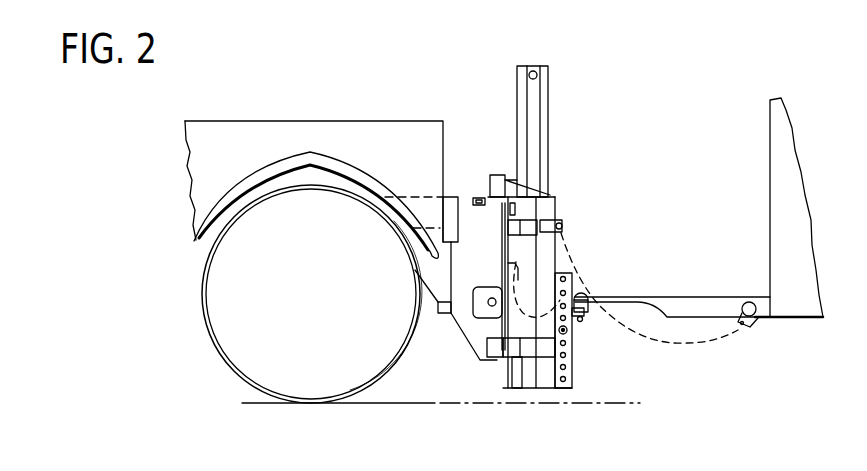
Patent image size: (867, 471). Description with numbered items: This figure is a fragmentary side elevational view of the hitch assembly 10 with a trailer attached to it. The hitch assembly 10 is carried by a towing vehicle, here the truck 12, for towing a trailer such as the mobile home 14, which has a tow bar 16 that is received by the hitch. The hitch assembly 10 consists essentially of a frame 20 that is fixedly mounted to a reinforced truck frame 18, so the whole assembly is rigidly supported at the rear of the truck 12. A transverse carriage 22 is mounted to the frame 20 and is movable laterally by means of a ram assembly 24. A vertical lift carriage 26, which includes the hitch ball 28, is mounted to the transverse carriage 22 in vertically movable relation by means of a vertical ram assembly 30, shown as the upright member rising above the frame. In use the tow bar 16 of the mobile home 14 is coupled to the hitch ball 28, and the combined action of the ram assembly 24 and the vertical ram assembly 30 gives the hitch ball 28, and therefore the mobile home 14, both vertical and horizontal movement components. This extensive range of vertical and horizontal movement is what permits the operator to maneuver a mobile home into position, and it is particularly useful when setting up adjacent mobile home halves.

The hitch assembly 10 is at (562, 164).
The truck 12 is at (275, 105).
The mobile home 14 is at (760, 196).
The tow bar 16 is at (685, 296).
The reinforced truck frame 18 is at (452, 196).
The frame 20 is at (471, 218).
The transverse carriage 22 is at (556, 206).
The ram assembly 24 is at (477, 310).
The vertical lift carriage 26 is at (591, 311).
The hitch ball 28 is at (582, 289).
The vertical ram assembly 30 is at (549, 86).